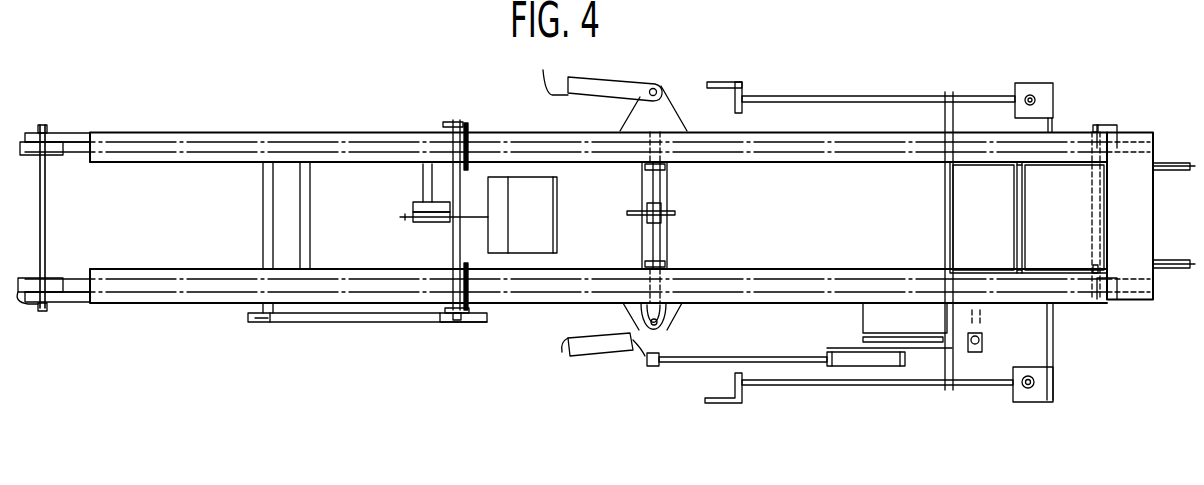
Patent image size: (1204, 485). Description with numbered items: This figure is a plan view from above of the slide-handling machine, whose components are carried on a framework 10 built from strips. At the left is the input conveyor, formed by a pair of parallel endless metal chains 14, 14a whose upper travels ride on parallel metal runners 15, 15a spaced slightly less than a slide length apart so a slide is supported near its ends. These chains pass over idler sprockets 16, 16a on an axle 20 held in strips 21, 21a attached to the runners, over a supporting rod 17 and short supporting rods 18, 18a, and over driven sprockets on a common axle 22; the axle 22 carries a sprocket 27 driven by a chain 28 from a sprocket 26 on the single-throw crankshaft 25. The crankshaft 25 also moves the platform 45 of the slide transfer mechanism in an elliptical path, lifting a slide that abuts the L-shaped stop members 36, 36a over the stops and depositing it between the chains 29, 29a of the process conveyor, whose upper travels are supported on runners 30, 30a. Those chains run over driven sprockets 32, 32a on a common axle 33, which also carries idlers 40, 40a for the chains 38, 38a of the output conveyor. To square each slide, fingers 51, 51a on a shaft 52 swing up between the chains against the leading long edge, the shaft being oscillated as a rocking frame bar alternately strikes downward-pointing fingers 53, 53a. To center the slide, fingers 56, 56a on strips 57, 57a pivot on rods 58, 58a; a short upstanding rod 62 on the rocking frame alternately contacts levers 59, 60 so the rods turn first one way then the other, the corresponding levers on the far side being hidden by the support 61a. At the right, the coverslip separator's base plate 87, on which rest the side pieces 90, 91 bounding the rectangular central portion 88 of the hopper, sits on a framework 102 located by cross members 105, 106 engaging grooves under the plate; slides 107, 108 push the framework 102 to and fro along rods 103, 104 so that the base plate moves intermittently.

The framework 10 is at (743, 413).
The endless metal chain 14 is at (80, 272).
The endless metal chain 14a is at (80, 161).
The metal runner 15 is at (155, 322).
The metal runner 15a is at (203, 132).
The idler sprocket 16 is at (24, 306).
The idler sprocket 16a is at (28, 135).
The supporting rod 17 is at (305, 188).
The short supporting rod 18 is at (460, 322).
The short supporting rod 18a is at (445, 127).
The axle 20 is at (46, 220).
The strip 21 is at (79, 305).
The strip 21a is at (77, 131).
The common axle 22 is at (262, 185).
The single-throw crankshaft 25 is at (452, 238).
The sprocket 26 is at (452, 323).
The sprocket 27 is at (260, 322).
The chain 28 is at (322, 325).
The endless metal chain 29 is at (593, 312).
The endless metal chain 29a is at (582, 147).
The metal runner 30 is at (540, 312).
The metal runner 30a is at (525, 139).
The driven sprocket 32 is at (1111, 302).
The driven sprocket 32a is at (1110, 128).
The common axle 33 is at (1087, 194).
The L-shaped stop member 36 is at (470, 300).
The L-shaped stop member 36a is at (468, 127).
The endless metal chain 38 is at (1170, 258).
The endless metal chain 38a is at (1155, 170).
The idler 40 is at (1090, 268).
The idler 40a is at (1090, 133).
The platform 45 is at (522, 215).
The finger 51 is at (644, 253).
The finger 51a is at (669, 168).
The shaft 52 is at (643, 184).
The finger 53 is at (627, 216).
The finger 53a is at (678, 217).
The finger 56 is at (563, 352).
The finger 56a is at (542, 71).
The strip 57 is at (588, 354).
The strip 57a is at (607, 84).
The rod 58 is at (666, 362).
The rod 58a is at (654, 86).
The lever 59 is at (626, 362).
The lever 60 is at (669, 320).
The support 61a is at (690, 105).
The short upstanding rod 62 is at (668, 268).
The base plate 87 is at (1130, 216).
The rectangular central portion 88 is at (970, 216).
The side piece 90 is at (948, 256).
The side piece 91 is at (950, 186).
The framework 102 is at (931, 116).
The rod 103 is at (829, 387).
The rod 104 is at (812, 96).
The cross member 105 is at (1054, 350).
The cross member 106 is at (946, 378).
The slide 107 is at (1012, 404).
The slide 108 is at (1015, 86).